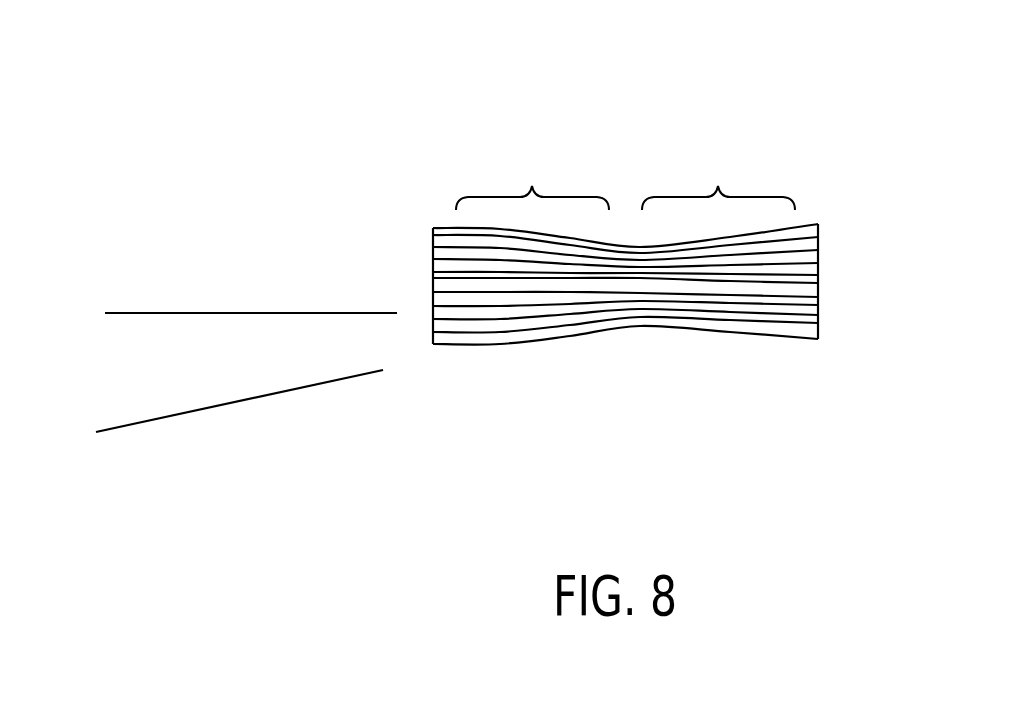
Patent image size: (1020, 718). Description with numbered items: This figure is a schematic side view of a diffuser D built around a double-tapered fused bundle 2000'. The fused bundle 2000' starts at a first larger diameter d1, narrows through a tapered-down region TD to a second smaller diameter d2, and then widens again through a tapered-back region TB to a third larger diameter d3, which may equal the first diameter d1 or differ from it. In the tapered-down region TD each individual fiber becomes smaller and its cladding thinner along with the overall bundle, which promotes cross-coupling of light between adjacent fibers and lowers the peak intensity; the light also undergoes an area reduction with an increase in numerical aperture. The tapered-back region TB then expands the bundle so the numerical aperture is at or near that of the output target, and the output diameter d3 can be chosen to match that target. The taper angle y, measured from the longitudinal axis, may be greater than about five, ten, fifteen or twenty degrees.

The double-tapered fused bundle 2000' is at (682, 242).
The diffuser D is at (749, 99).
The tapered-down region TD is at (532, 178).
The tapered-back region TB is at (718, 178).
The first larger diameter d1 is at (487, 345).
The second smaller diameter d2 is at (657, 340).
The third larger diameter d3 is at (812, 344).
The taper angle y is at (215, 318).